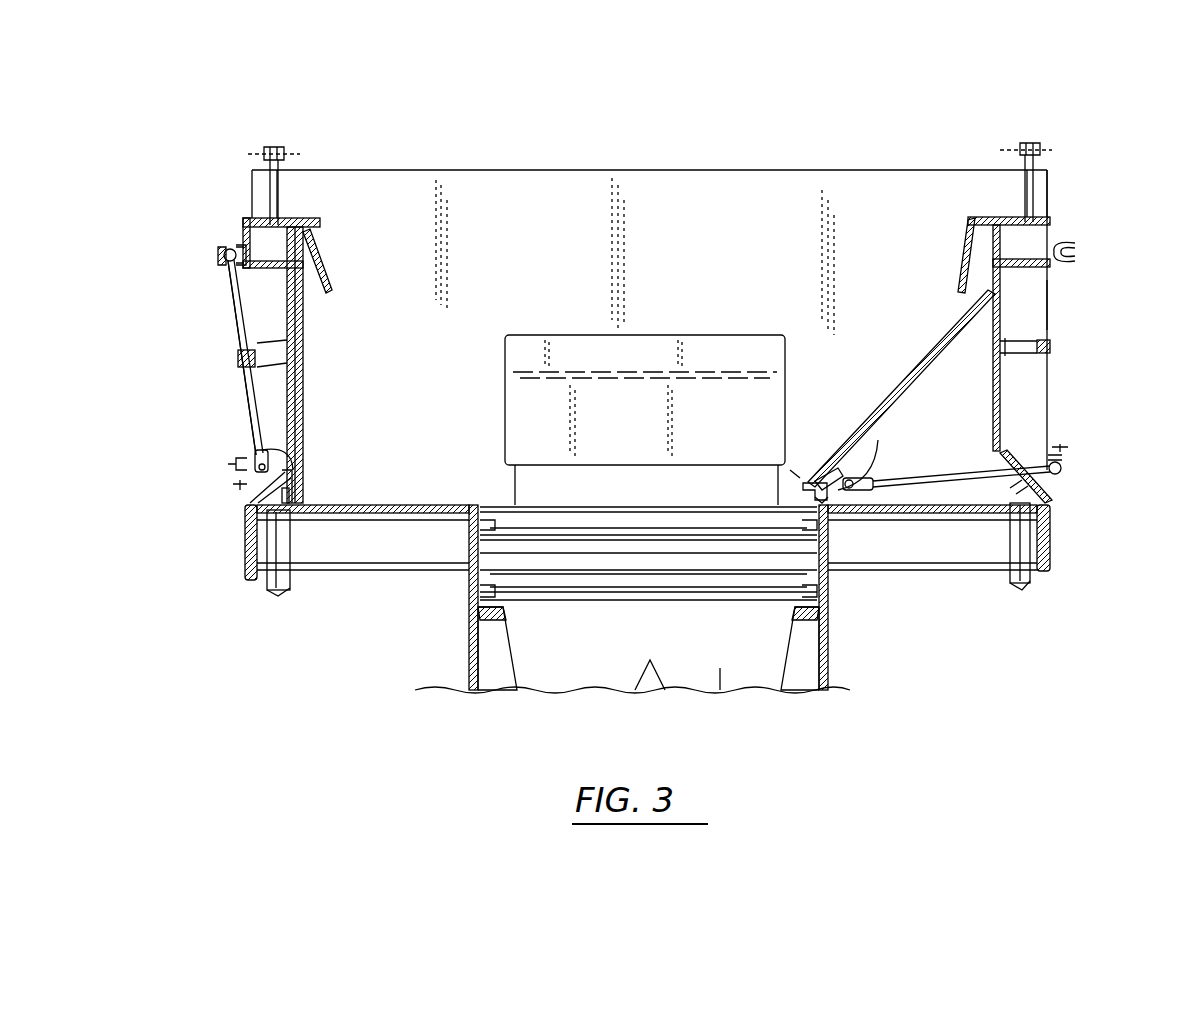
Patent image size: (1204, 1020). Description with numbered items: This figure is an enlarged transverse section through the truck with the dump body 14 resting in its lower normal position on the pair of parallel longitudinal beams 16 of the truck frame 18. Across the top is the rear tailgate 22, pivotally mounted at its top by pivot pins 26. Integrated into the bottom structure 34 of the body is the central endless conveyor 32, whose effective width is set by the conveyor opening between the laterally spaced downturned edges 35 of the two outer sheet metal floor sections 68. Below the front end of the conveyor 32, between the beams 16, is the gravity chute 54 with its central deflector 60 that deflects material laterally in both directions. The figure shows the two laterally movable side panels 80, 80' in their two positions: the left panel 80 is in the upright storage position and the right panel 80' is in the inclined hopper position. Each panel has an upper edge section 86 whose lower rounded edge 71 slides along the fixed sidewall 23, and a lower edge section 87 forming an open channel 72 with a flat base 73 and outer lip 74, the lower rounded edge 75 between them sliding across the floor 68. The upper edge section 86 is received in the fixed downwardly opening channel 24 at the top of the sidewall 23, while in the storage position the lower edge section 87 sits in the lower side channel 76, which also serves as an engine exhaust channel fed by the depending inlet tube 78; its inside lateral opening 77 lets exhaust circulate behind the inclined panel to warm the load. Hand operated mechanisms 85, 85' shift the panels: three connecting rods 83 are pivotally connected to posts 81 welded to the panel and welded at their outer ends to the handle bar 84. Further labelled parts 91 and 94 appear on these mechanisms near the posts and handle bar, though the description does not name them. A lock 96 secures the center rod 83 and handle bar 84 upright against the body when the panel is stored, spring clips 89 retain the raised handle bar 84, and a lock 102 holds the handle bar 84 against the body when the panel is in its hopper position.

The dump body 14 is at (1072, 180).
The longitudinal beams 16 is at (470, 652).
The truck frame 18 is at (462, 670).
The rear tailgate 22 is at (672, 170).
The sidewall 23 is at (287, 300).
The channel 24 is at (320, 224).
The pivot pins 26 is at (290, 156).
The endless conveyor 32 is at (658, 600).
The bottom structure 34 is at (385, 573).
The downturned edges 35 is at (497, 516).
The gravity chute 54 is at (743, 670).
The central deflector 60 is at (638, 686).
The floor sections 68 is at (472, 505).
The lower rounded edge 71 is at (1048, 305).
The open channel 72 is at (292, 493).
The flat base 73 is at (803, 493).
The outer lip 74 is at (850, 510).
The lower rounded edge 75 is at (266, 503).
The lower side channel 76 is at (243, 463).
The inside lateral opening 77 is at (302, 488).
The depending inlet tube 78 is at (290, 540).
The side panel 80 is at (311, 348).
The side panel 80' is at (901, 388).
The post 81 is at (257, 455).
The connecting rods 83 is at (241, 330).
The handle bar 84 is at (224, 252).
The hand operated mechanism 85 is at (174, 251).
The hand operated mechanism 85' is at (1061, 414).
The upper edge section 86 is at (318, 258).
The lower edge section 87 is at (335, 484).
The spring clips 89 is at (232, 240).
The spring 91 is at (293, 455).
The rod 94 is at (235, 272).
The lock 96 is at (268, 378).
The lock 102 is at (232, 486).